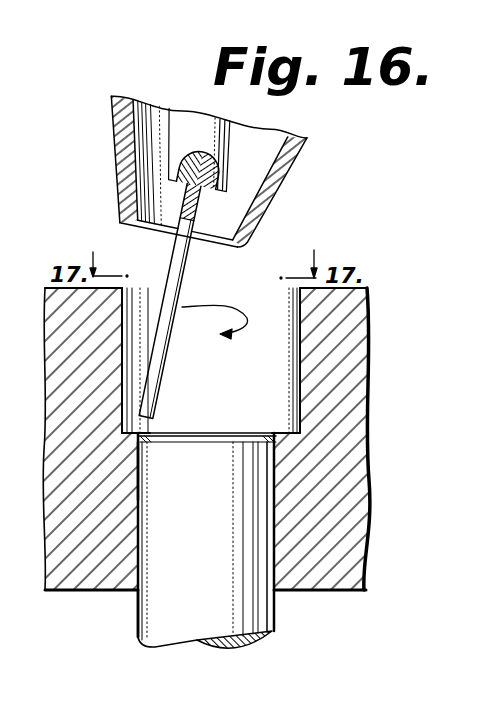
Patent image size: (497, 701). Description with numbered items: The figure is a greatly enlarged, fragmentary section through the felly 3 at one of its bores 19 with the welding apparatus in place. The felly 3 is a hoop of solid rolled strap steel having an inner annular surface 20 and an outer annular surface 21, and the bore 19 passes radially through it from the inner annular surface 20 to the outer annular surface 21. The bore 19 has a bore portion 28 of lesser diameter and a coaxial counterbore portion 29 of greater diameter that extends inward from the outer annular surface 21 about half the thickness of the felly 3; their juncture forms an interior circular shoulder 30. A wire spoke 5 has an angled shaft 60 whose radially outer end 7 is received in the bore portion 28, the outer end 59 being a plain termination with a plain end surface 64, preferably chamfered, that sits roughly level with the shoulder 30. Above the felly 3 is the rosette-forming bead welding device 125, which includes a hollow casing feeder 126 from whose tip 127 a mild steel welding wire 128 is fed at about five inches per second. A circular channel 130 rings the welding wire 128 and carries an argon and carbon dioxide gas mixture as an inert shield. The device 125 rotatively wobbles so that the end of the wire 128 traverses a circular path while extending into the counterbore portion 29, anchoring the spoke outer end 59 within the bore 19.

The felly 3 is at (366, 513).
The wire spoke 5 is at (148, 609).
The radially outer end 7 is at (227, 447).
The bore 19 is at (147, 463).
The inner annular surface 20 is at (76, 590).
The outer annular surface 21 is at (360, 289).
The bore portion 28 is at (138, 517).
The counterbore portion 29 is at (296, 337).
The interior circular shoulder 30 is at (286, 433).
The outer end 59 is at (187, 622).
The angled shaft 60 is at (266, 629).
The plain end surface 64 is at (187, 415).
The rosette-forming bead welding device 125 is at (300, 157).
The hollow casing feeder 126 is at (118, 140).
The tip 127 is at (120, 226).
The welding wire 128 is at (167, 362).
The circular channel 130 is at (152, 183).